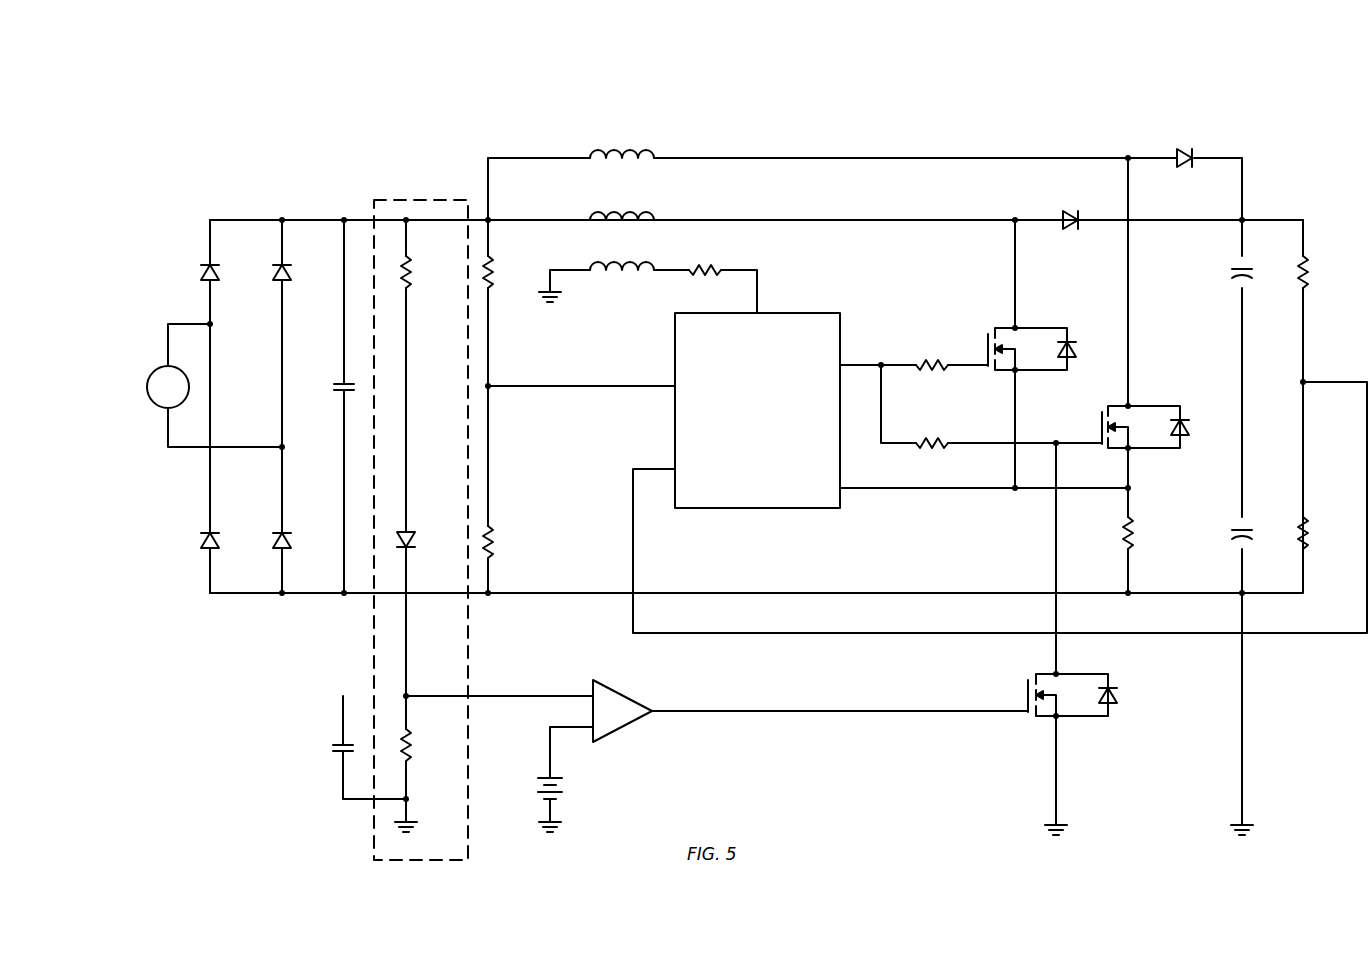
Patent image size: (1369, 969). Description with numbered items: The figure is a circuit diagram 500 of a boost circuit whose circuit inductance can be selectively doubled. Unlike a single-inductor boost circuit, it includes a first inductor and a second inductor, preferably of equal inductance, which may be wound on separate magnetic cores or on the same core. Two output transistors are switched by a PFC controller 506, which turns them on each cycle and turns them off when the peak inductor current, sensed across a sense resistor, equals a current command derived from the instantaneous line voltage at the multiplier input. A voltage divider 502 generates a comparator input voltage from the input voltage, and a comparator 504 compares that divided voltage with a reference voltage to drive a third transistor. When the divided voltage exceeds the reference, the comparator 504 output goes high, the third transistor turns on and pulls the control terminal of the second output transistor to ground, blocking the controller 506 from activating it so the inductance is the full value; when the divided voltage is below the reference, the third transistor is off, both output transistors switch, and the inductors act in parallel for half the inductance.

The circuit diagram 500 is at (1064, 107).
The voltage divider 502 is at (421, 200).
The comparator 504 is at (620, 728).
The PFC controller 506 is at (797, 313).